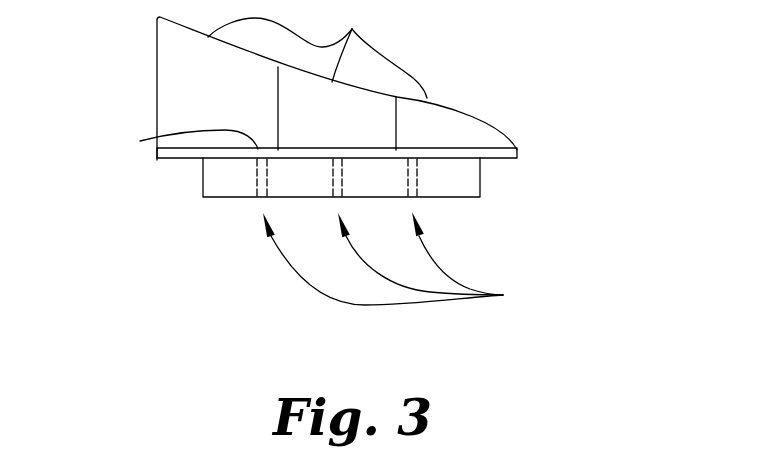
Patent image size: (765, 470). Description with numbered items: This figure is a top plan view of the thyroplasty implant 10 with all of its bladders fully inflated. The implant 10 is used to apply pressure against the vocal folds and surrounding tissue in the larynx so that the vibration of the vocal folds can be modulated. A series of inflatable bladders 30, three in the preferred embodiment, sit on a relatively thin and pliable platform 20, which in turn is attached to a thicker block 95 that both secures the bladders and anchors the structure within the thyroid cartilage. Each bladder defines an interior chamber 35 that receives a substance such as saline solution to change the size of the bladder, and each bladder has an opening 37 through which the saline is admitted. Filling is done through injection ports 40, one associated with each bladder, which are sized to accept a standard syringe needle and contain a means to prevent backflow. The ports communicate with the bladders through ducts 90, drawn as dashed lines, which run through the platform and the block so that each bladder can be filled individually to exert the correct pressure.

The thyroplasty implant 10 is at (551, 109).
The platform 20 is at (480, 178).
The inflatable bladders 30 is at (317, 49).
The chamber 35 is at (175, 72).
The opening 37 is at (140, 141).
The injection ports 40 is at (503, 295).
The ducts 90 is at (257, 175).
The block 95 is at (518, 154).